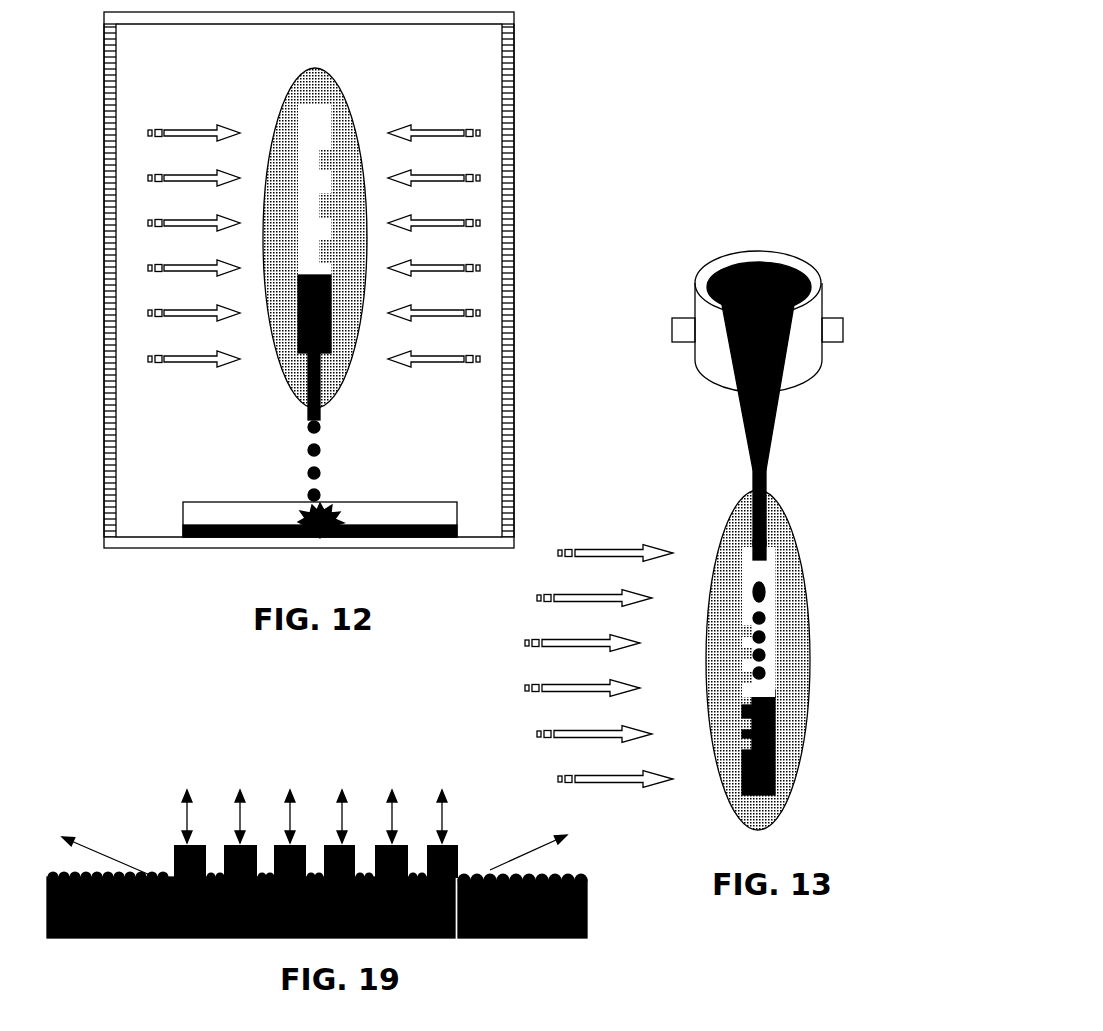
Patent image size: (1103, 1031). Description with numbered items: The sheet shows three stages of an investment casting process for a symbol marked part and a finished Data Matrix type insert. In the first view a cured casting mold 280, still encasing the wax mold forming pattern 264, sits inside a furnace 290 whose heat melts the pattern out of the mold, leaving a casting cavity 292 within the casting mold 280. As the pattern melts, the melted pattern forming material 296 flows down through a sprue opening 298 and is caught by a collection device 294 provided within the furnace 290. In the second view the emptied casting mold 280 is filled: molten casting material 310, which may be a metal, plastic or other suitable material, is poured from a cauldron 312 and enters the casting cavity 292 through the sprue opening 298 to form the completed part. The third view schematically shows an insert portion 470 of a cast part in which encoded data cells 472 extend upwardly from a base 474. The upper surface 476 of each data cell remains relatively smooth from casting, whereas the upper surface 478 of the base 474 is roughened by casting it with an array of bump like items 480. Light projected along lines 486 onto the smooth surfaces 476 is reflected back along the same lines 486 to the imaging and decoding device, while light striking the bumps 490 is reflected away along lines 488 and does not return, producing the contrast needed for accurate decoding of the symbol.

In FIG. 12, the mold forming pattern 264 is at (293, 333).
In FIG. 12, the casting mold 280 is at (318, 93).
In FIG. 13, the casting mold 280 is at (812, 647).
In FIG. 12, the furnace 290 is at (514, 205).
In FIG. 12, the casting cavity 292 is at (315, 128).
In FIG. 13, the casting cavity 292 is at (768, 585).
In FIG. 12, the collection device 294 is at (367, 507).
In FIG. 12, the melted pattern forming material 296 is at (276, 523).
In FIG. 12, the sprue opening 298 is at (306, 398).
In FIG. 13, the sprue opening 298 is at (762, 525).
In FIG. 13, the molten casting material 310 is at (742, 265).
In FIG. 13, the cauldron 312 is at (817, 292).
In FIG. 19, the insert portion 470 is at (327, 775).
In FIG. 19, the encoded data cells 472 is at (162, 863).
In FIG. 19, the base 474 is at (201, 940).
In FIG. 19, the upper surface 476 is at (200, 837).
In FIG. 19, the upper surface of base 478 is at (170, 848).
In FIG. 19, the bump like items 480 is at (270, 875).
In FIG. 19, the lines 486 is at (183, 818).
In FIG. 19, the lines 488 is at (150, 875).
In FIG. 19, the bumps 490 is at (77, 877).